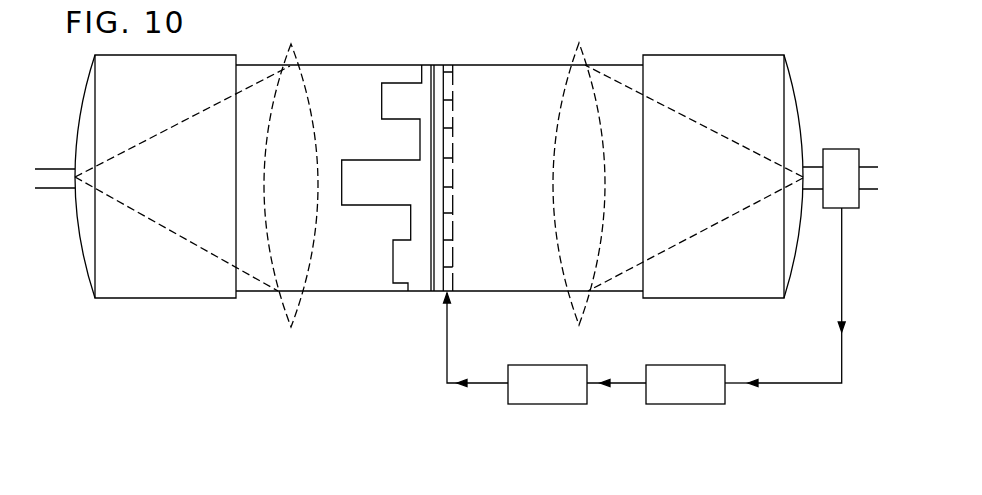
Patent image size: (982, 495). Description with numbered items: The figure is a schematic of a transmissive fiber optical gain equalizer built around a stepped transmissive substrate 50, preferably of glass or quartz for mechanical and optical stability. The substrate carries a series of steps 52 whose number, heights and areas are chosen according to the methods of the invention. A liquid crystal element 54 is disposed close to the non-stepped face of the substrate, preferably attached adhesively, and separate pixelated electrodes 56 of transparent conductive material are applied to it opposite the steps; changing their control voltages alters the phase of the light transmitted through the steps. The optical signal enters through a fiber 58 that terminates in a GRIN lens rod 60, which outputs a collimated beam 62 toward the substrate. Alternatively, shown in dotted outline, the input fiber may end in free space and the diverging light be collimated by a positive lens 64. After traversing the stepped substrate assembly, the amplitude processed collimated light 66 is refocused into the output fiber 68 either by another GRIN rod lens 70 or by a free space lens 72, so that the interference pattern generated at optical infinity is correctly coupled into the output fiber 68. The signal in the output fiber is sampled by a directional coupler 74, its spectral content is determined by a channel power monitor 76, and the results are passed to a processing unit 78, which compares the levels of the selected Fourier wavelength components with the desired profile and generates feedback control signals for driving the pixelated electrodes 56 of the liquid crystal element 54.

The stepped transmissive substrate 50 is at (389, 229).
The steps 52 is at (393, 265).
The liquid crystal element 54 is at (437, 293).
The pixelated electrodes 56 is at (450, 178).
The fiber 58 is at (50, 168).
The GRIN lens rod 60 is at (147, 300).
The collimated beam 62 is at (318, 295).
The positive lens 64 is at (278, 305).
The collimated light beam 66 is at (508, 292).
The output fiber 68 is at (802, 170).
The GRIN rod lens 70 is at (720, 298).
The free space lens 72 is at (568, 302).
The directional coupler 74 is at (842, 148).
The channel power monitor 76 is at (692, 404).
The processing unit 78 is at (548, 404).